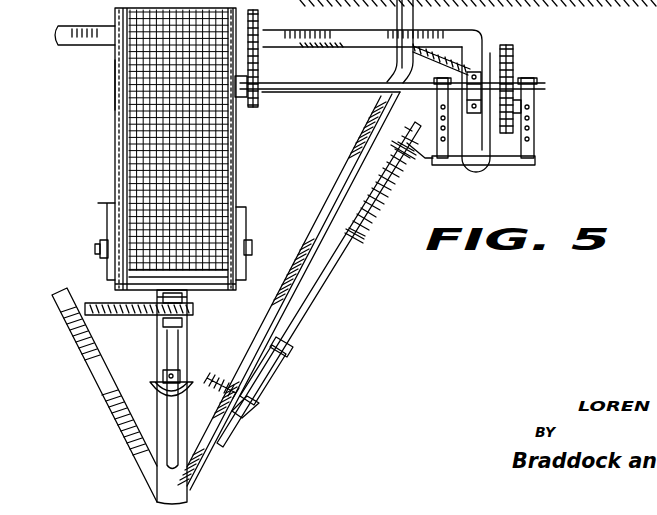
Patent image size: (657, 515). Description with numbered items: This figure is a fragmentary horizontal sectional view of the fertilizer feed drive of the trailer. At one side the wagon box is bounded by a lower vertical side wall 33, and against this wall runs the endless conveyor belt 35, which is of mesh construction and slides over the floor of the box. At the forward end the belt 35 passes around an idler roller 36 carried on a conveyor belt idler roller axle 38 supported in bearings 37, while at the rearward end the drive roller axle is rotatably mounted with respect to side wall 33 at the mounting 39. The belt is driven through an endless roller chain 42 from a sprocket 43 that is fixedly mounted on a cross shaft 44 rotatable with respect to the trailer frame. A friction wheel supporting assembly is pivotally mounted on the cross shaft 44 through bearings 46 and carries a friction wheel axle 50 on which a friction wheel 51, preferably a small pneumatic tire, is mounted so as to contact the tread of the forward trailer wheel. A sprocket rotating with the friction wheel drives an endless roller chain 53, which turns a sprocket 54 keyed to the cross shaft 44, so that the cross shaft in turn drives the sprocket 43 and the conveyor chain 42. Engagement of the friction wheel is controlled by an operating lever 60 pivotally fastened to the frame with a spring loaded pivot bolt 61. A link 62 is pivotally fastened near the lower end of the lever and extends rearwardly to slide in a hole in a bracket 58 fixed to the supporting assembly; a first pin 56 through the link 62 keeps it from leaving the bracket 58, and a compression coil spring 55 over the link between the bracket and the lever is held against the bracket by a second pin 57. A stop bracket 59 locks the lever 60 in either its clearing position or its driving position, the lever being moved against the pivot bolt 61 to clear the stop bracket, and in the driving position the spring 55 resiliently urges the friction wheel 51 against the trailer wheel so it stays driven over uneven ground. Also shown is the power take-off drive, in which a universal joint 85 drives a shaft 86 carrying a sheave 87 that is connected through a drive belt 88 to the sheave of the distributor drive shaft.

The lower vertical side wall 33 is at (115, 83).
The endless conveyor belt 35 is at (118, 172).
The idler roller 36 is at (100, 246).
The bearing 37 is at (252, 248).
The conveyor belt idler roller axle 38 is at (97, 255).
The drive roller axle mounting 39 is at (124, 115).
The endless roller chain 42 is at (258, 30).
The sprocket 43 is at (262, 82).
The cross shaft 44 is at (312, 96).
The bearing 46 is at (377, 99).
The friction wheel axle 50 is at (536, 110).
The friction wheel 51 is at (486, 165).
The endless roller chain 53 is at (512, 45).
The sprocket 54 is at (516, 70).
The compression coil spring 55 is at (378, 202).
The first pin 56 is at (402, 140).
The second pin 57 is at (357, 238).
The bracket 58 is at (430, 163).
The stop bracket 59 is at (283, 385).
The operating lever 60 is at (284, 354).
The spring loaded pivot bolt 61 is at (253, 404).
The link 62 is at (310, 303).
The universal joint 85 is at (150, 390).
The shaft 86 is at (180, 352).
The sheave 87 is at (194, 308).
The drive belt 88 is at (113, 315).